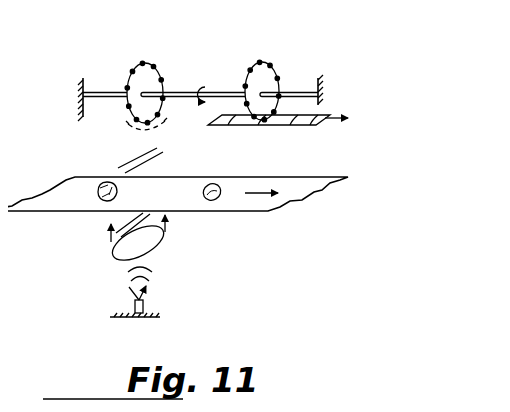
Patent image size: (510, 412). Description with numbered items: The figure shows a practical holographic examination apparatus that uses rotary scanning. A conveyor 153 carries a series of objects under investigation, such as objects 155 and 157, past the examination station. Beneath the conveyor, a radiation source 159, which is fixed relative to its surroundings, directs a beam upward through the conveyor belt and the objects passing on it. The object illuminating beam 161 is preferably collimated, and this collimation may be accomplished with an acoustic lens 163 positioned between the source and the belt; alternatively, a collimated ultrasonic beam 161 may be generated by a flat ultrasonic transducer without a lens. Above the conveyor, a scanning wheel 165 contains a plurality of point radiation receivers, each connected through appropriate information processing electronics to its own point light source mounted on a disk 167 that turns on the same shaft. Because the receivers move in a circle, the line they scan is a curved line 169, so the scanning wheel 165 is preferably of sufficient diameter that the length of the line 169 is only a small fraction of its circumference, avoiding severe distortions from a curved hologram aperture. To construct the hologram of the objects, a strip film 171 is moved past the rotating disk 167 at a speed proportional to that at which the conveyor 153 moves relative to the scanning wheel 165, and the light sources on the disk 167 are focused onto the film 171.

The conveyor 153 is at (298, 183).
The object 155 is at (220, 185).
The object 157 is at (100, 183).
The radiation source 159 is at (145, 306).
The object illuminating beam 161 is at (109, 241).
The acoustic lens 163 is at (160, 240).
The scanning wheel 165 is at (142, 72).
The disk 167 is at (266, 78).
The curved line 169 is at (155, 128).
The strip film 171 is at (286, 117).